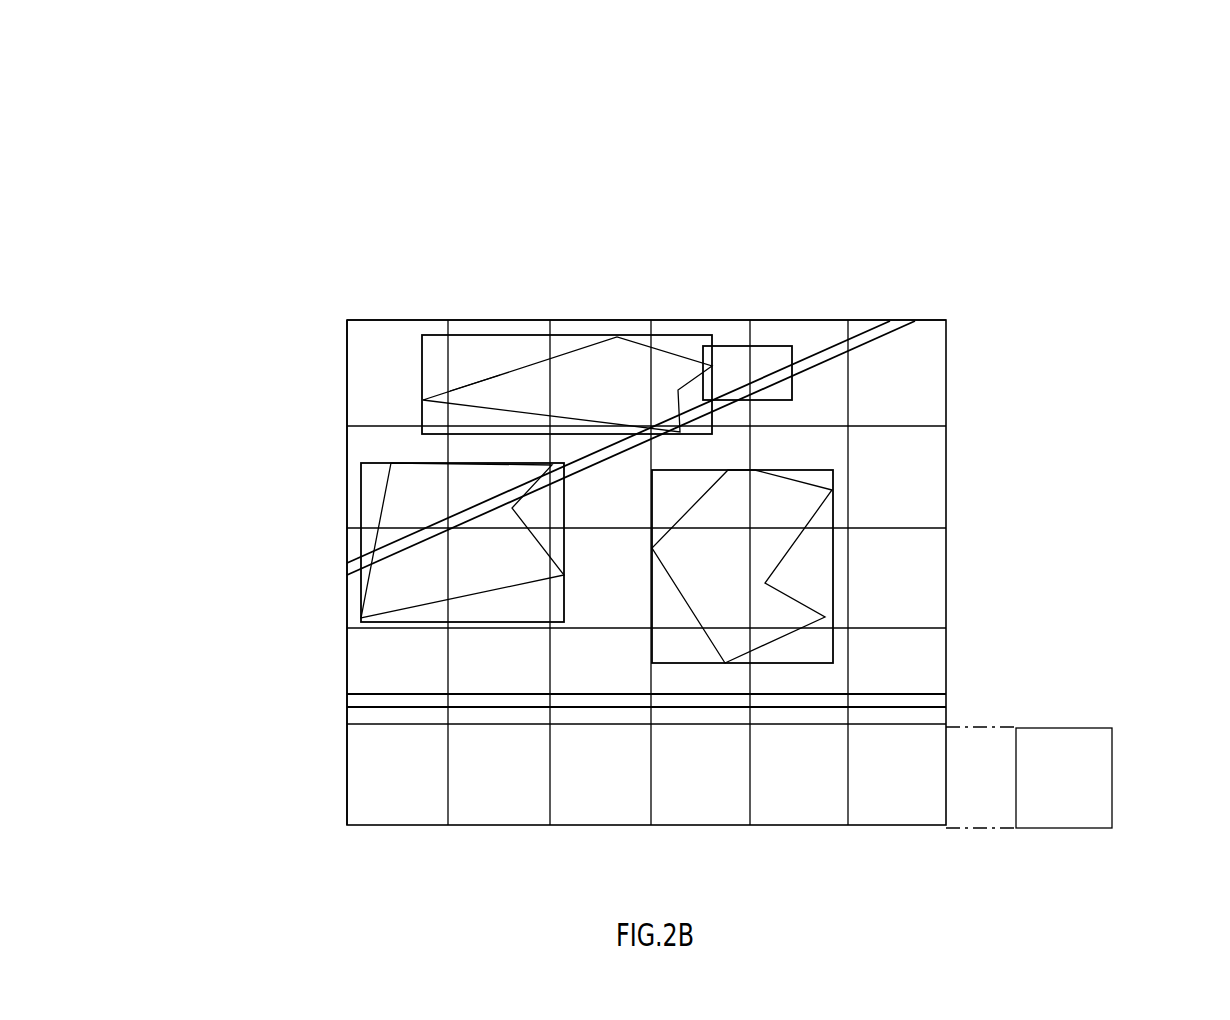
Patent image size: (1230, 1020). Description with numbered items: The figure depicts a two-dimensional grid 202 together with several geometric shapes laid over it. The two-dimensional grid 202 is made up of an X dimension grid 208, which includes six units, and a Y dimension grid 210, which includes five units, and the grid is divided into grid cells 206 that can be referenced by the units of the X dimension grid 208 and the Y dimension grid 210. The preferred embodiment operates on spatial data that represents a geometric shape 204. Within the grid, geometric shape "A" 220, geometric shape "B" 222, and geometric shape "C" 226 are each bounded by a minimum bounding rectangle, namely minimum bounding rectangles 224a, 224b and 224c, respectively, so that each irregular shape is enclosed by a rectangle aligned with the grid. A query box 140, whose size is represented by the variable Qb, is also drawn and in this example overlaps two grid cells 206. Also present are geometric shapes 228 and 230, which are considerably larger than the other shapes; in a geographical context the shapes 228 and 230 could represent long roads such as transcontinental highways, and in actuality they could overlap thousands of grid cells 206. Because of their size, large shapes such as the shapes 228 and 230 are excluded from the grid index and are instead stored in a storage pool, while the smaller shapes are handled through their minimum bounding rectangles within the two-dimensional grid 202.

The two-dimensional grid 202 is at (138, 815).
The X dimension grid 208 is at (472, 116).
The Y dimension grid 210 is at (97, 473).
The geometric shape 204 is at (583, 350).
The geometric shape "C" 226 is at (477, 381).
The query box size Qb 140 is at (775, 347).
The geometric shape 228 is at (830, 348).
The minimum bounding rectangle 224c is at (422, 362).
The minimum bounding rectangle 224a is at (361, 606).
The minimum bounding rectangle 224b is at (833, 508).
The geometric shape "A" 220 is at (383, 508).
The geometric shape "B" 222 is at (800, 537).
The geometric shape 230 is at (920, 710).
The grid cell 206 is at (1112, 780).